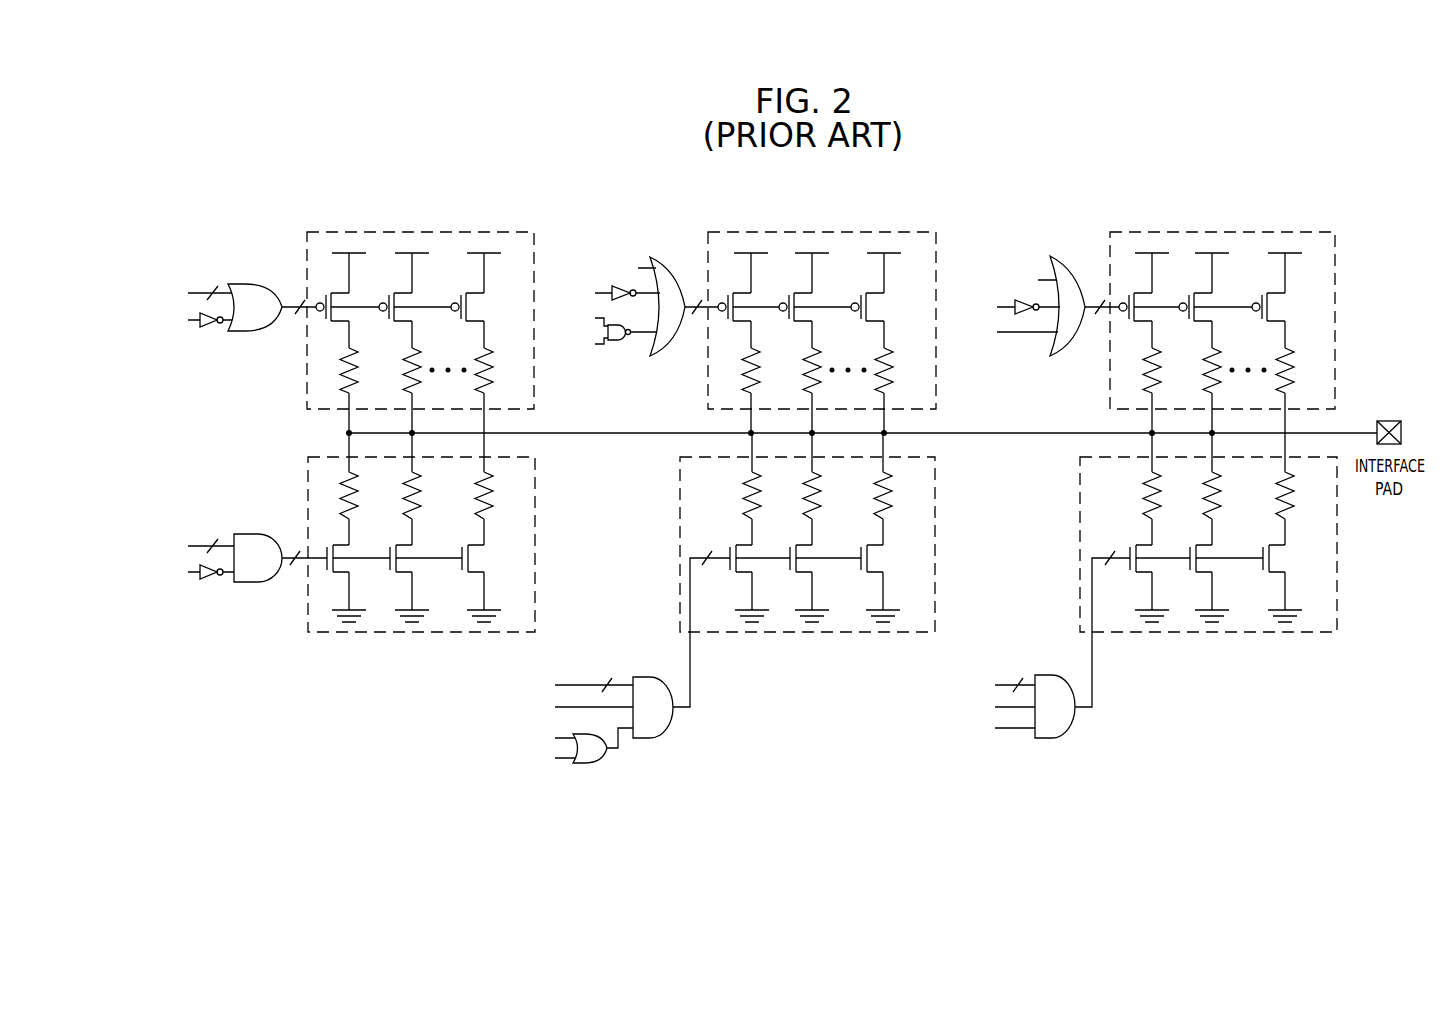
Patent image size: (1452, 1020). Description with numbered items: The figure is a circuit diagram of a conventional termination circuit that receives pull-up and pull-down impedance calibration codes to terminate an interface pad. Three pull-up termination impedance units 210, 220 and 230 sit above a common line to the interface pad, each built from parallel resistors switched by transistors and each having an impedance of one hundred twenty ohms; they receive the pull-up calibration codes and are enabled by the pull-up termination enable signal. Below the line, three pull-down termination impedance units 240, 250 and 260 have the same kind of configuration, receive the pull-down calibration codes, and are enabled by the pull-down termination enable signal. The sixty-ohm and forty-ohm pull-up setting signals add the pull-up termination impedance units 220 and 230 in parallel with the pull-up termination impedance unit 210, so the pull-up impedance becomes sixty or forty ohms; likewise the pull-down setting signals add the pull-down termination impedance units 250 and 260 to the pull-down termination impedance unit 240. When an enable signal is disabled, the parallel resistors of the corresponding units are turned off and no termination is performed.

The pull-up termination impedance unit 210 is at (486, 232).
The pull-up termination impedance unit 220 is at (889, 232).
The pull-up termination impedance unit 230 is at (1289, 232).
The pull-down termination impedance unit 240 is at (487, 633).
The pull-down termination impedance unit 250 is at (888, 633).
The pull-down termination impedance unit 260 is at (1289, 633).